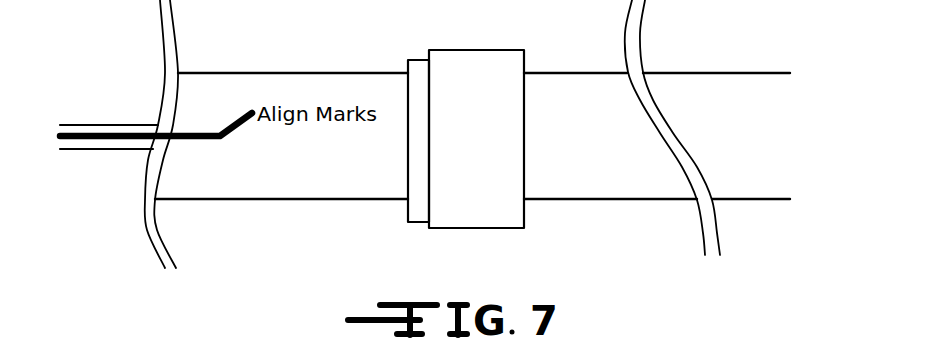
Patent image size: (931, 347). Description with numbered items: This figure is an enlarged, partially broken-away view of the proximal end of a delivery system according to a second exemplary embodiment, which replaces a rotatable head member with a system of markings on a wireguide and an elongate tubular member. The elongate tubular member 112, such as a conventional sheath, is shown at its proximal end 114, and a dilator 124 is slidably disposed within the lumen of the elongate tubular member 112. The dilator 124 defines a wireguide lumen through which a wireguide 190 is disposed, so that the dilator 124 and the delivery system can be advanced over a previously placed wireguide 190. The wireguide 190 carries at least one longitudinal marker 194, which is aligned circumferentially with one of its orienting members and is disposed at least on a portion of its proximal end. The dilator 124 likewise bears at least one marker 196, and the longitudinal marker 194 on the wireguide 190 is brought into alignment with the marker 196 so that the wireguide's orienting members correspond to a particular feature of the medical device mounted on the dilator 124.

The elongate tubular member 112 is at (585, 199).
The proximal end 114 is at (670, 73).
The dilator 124 is at (267, 178).
The wireguide 190 is at (112, 123).
The longitudinal marker 194 is at (103, 149).
The marker 196 is at (198, 140).